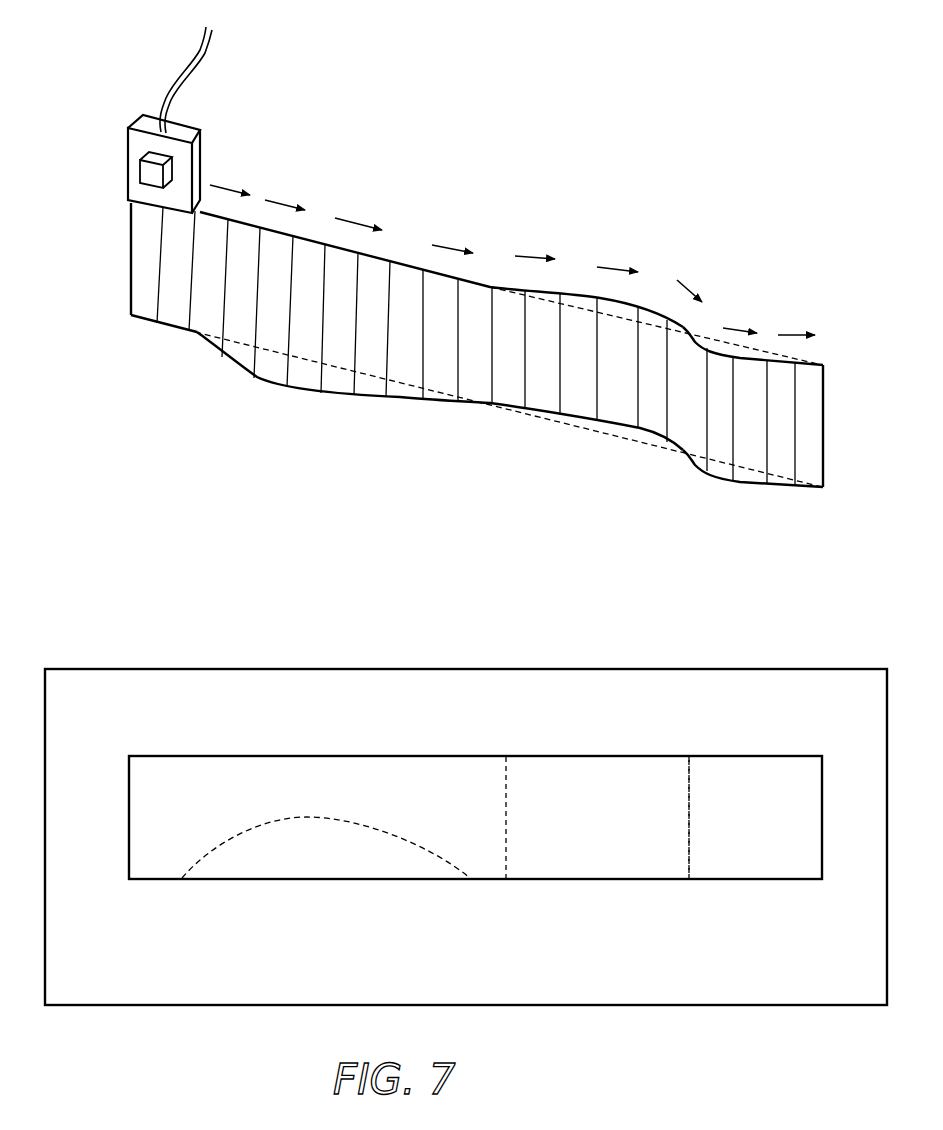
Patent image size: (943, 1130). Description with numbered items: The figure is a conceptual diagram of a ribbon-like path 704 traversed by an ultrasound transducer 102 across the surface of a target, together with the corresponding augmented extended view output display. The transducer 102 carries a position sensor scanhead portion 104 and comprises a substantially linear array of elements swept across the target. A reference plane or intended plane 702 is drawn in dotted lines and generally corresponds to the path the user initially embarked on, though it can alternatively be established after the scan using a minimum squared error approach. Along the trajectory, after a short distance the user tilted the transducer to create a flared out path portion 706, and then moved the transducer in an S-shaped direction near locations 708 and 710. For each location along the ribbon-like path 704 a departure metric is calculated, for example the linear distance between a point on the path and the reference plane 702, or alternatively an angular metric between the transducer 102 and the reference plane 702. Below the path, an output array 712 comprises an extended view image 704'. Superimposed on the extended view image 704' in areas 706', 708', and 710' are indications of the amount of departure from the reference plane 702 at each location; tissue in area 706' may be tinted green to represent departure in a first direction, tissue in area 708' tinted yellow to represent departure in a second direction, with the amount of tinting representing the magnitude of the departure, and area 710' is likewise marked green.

The ultrasound transducer 102 is at (133, 127).
The position sensor scanhead portion 104 is at (141, 159).
The ribbon-like path 704 is at (477, 335).
The flared out path portion 706 is at (294, 389).
The reference plane 702 is at (366, 371).
The location on ribbon-like path 708 is at (611, 386).
The location on ribbon-like path 710 is at (734, 427).
The output array 712 is at (222, 668).
The extended view image 704' is at (475, 785).
The area of extended view image 706' is at (326, 896).
The area of extended view image 708' is at (597, 854).
The area of extended view image 710' is at (729, 875).